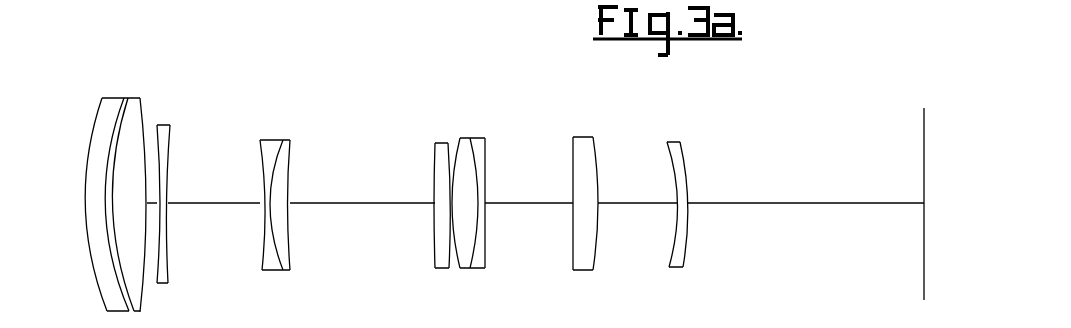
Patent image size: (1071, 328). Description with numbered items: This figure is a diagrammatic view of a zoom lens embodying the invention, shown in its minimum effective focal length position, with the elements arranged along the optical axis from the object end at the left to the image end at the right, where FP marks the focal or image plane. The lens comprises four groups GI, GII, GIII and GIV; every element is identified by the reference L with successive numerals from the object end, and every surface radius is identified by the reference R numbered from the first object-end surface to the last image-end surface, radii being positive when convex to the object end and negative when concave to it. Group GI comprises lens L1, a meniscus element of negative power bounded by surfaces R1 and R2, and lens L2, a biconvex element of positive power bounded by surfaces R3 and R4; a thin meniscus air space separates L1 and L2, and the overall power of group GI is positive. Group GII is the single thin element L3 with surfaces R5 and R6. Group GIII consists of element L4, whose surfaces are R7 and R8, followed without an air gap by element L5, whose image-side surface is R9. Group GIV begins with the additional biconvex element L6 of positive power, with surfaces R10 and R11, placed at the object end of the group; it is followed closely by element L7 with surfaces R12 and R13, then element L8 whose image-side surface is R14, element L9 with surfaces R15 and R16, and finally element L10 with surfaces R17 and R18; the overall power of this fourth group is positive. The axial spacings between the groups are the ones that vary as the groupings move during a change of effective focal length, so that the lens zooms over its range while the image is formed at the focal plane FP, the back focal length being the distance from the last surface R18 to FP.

The first lens group GI is at (142, 55).
The second lens group GII is at (175, 55).
The third lens group GIII is at (292, 98).
The fourth lens group GIV is at (685, 98).
The first lens element L1 is at (107, 298).
The second lens element L2 is at (130, 260).
The third lens element L3 is at (165, 265).
The fourth lens element L4 is at (272, 258).
The fifth lens element L5 is at (287, 252).
The sixth lens element L6 is at (440, 258).
The seventh lens element L7 is at (458, 260).
The eighth lens element L8 is at (483, 263).
The ninth lens element L9 is at (582, 258).
The tenth lens element L10 is at (678, 260).
The first lens surface R1 is at (92, 145).
The second lens surface R2 is at (100, 123).
The third lens surface R3 is at (130, 103).
The fourth lens surface R4 is at (131, 106).
The fifth lens surface R5 is at (162, 125).
The sixth lens surface R6 is at (170, 163).
The seventh lens surface R7 is at (263, 160).
The eighth lens surface R8 is at (280, 141).
The ninth lens surface R9 is at (288, 163).
The tenth lens surface R10 is at (435, 175).
The eleventh lens surface R11 is at (437, 155).
The twelfth lens surface R12 is at (460, 150).
The thirteenth lens surface R13 is at (467, 143).
The fourteenth lens surface R14 is at (487, 175).
The fifteenth lens surface R15 is at (573, 173).
The sixteenth lens surface R16 is at (597, 150).
The seventeenth lens surface R17 is at (668, 163).
The eighteenth lens surface R18 is at (683, 157).
The focal plane FP is at (923, 137).